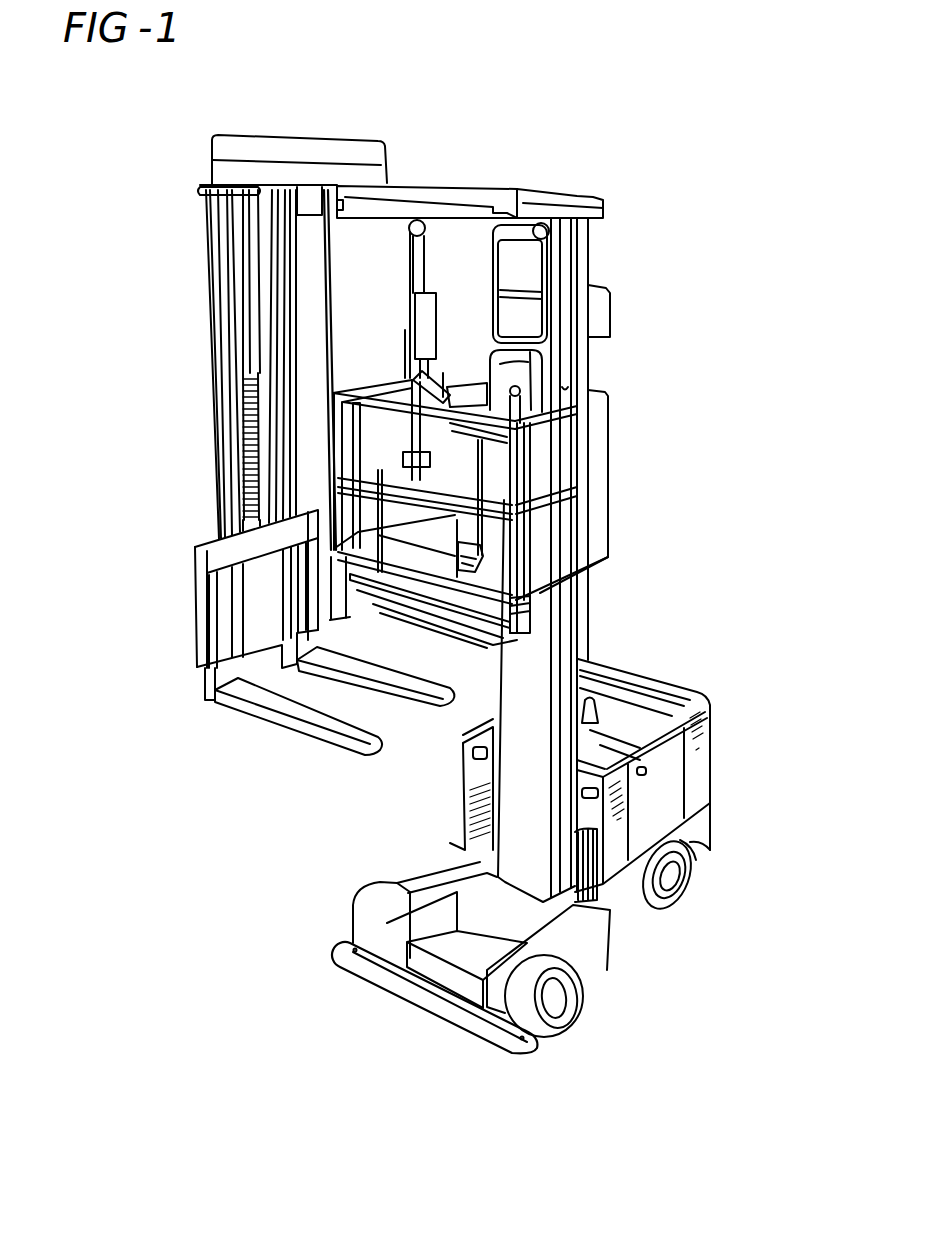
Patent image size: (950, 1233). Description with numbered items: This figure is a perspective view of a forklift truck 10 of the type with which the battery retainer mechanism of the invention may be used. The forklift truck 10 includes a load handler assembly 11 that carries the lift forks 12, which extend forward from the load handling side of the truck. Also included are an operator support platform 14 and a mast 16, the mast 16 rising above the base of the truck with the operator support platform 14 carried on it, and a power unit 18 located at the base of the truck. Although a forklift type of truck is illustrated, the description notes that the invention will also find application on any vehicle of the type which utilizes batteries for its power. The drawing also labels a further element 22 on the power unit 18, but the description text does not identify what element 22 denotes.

The forklift truck 10 is at (605, 370).
The load handler assembly 11 is at (210, 463).
The lift forks 12 is at (310, 735).
The operator support platform 14 is at (547, 467).
The mast 16 is at (523, 793).
The power unit 18 is at (717, 714).
The access panel 22 is at (670, 788).